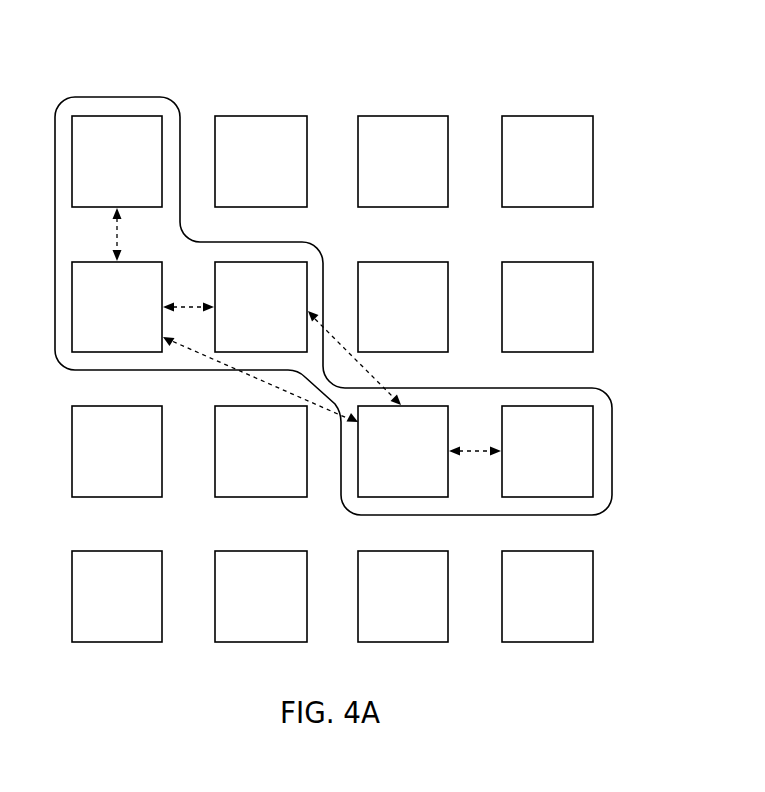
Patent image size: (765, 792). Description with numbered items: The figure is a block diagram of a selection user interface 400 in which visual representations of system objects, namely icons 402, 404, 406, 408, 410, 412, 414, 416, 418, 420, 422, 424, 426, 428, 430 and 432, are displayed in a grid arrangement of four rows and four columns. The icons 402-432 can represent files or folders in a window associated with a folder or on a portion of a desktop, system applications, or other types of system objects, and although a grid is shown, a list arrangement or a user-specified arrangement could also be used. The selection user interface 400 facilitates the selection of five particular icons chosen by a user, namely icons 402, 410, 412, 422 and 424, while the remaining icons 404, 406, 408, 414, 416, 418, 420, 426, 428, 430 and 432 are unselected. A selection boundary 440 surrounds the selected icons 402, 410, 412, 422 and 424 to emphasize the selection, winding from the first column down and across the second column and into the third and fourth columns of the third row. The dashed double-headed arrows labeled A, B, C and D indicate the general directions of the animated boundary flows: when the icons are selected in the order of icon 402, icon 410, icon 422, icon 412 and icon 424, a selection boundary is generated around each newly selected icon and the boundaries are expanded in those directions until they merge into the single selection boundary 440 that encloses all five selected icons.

The selection user interface 400 is at (536, 66).
The icon 402 is at (134, 172).
The icon 404 is at (278, 172).
The icon 406 is at (420, 172).
The icon 408 is at (564, 172).
The icon 410 is at (134, 317).
The icon 412 is at (278, 317).
The icon 414 is at (420, 317).
The icon 416 is at (564, 317).
The icon 418 is at (134, 462).
The icon 420 is at (278, 462).
The icon 422 is at (420, 462).
The icon 424 is at (564, 462).
The icon 426 is at (134, 607).
The icon 428 is at (278, 607).
The icon 430 is at (420, 607).
The icon 432 is at (564, 607).
The selection boundary 440 is at (176, 105).